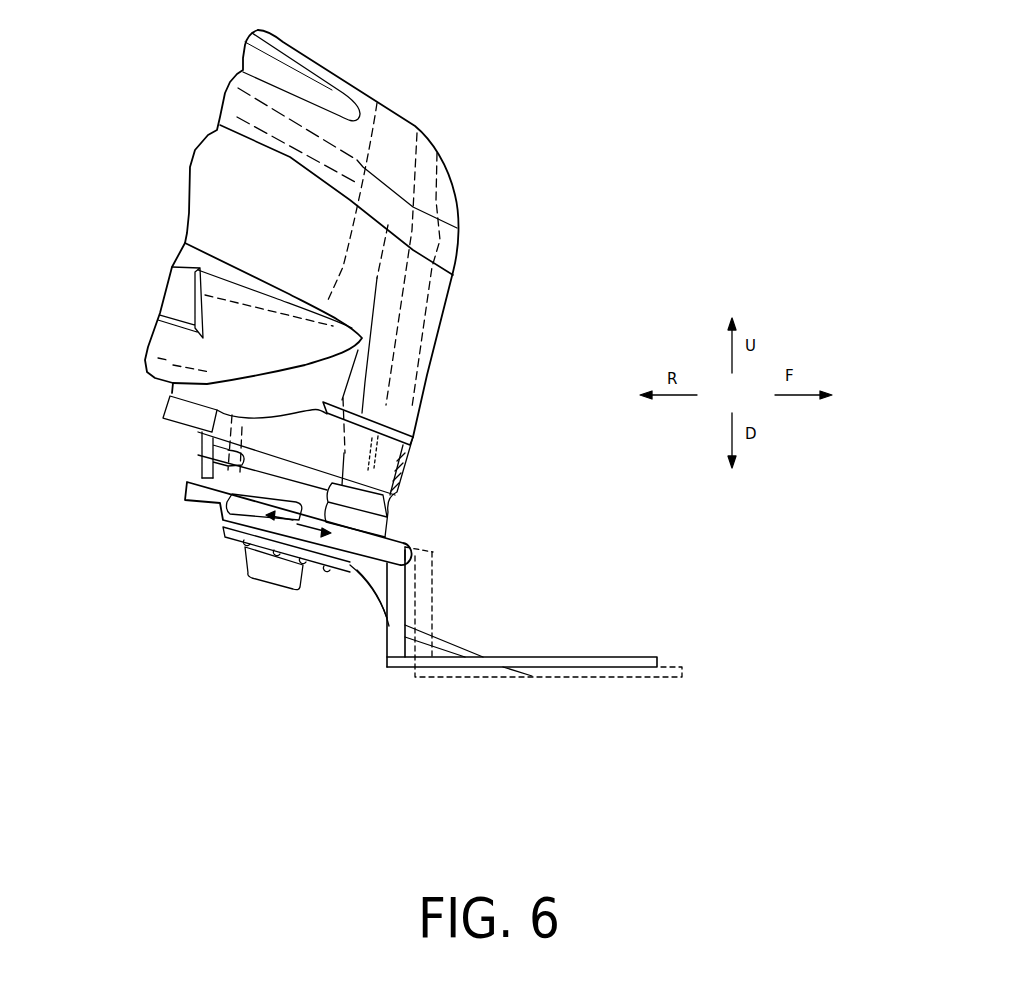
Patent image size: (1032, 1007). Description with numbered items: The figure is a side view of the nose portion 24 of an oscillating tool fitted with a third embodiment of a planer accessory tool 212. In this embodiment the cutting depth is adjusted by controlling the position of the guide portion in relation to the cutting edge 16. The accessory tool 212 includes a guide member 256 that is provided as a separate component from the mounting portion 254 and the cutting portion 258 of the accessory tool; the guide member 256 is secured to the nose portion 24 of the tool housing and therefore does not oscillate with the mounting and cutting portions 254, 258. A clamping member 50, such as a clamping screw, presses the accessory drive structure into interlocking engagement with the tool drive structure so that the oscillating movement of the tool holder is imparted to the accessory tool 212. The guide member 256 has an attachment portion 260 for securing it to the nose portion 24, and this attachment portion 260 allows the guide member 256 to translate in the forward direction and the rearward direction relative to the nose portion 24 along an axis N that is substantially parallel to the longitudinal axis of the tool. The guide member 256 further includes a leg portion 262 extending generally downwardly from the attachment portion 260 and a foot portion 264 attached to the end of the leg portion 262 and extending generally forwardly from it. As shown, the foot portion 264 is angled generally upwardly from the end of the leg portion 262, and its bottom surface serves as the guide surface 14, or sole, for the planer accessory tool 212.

The nose portion 24 is at (440, 315).
The guide member 256 is at (400, 543).
The attachment portion 260 is at (220, 500).
The mounting portion 254 is at (223, 541).
The clamping member 50 is at (283, 567).
The leg portion 262 is at (397, 603).
The cutting portion 258 is at (463, 648).
The foot portion 264 is at (625, 663).
The guide surface 14 is at (623, 665).
The cutting edge 16 is at (530, 675).
The planer accessory tool 212 is at (580, 610).
The axis N is at (200, 477).